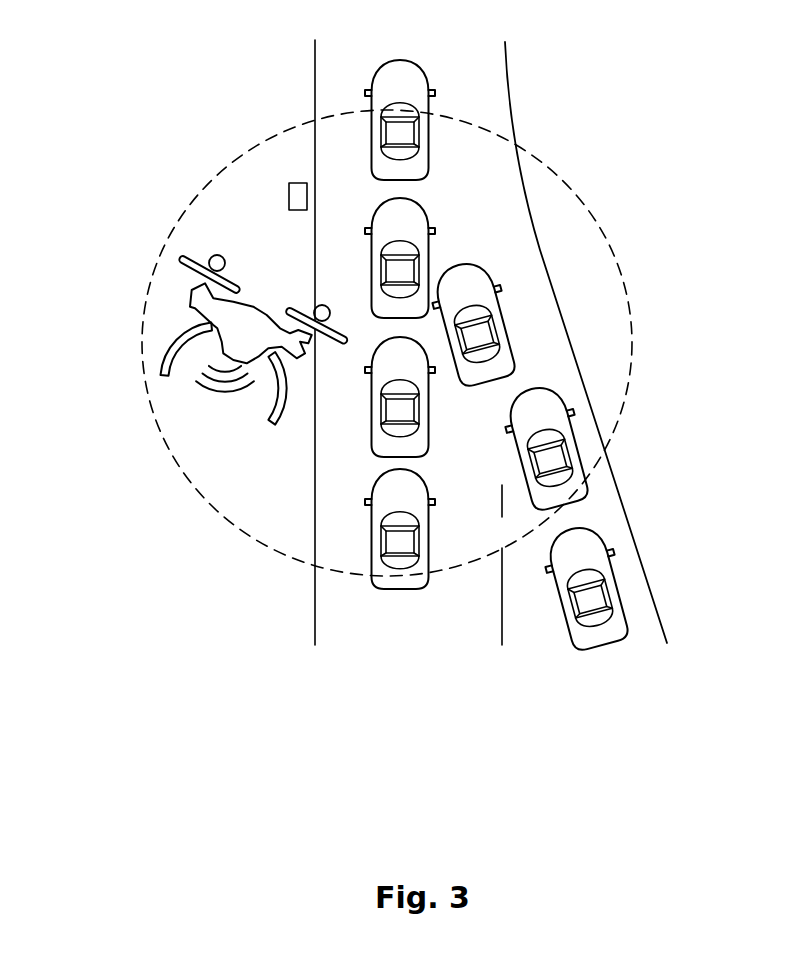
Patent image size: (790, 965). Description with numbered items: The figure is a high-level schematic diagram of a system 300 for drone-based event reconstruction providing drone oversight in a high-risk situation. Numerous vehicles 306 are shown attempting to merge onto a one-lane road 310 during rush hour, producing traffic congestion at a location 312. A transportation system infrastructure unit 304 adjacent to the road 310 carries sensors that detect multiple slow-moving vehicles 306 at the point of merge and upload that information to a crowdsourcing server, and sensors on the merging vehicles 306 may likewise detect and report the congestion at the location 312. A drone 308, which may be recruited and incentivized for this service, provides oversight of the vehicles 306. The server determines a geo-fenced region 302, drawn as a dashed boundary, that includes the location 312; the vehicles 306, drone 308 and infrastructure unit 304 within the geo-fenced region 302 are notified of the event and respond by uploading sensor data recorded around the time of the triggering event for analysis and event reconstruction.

The system 300 is at (97, 63).
The geo-fenced region 302 is at (625, 263).
The transportation system infrastructure unit 304 is at (294, 199).
The vehicle 306 is at (503, 366).
The drone 308 is at (265, 339).
The road 310 is at (493, 88).
The location 312 is at (453, 248).